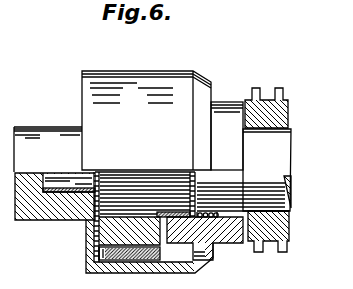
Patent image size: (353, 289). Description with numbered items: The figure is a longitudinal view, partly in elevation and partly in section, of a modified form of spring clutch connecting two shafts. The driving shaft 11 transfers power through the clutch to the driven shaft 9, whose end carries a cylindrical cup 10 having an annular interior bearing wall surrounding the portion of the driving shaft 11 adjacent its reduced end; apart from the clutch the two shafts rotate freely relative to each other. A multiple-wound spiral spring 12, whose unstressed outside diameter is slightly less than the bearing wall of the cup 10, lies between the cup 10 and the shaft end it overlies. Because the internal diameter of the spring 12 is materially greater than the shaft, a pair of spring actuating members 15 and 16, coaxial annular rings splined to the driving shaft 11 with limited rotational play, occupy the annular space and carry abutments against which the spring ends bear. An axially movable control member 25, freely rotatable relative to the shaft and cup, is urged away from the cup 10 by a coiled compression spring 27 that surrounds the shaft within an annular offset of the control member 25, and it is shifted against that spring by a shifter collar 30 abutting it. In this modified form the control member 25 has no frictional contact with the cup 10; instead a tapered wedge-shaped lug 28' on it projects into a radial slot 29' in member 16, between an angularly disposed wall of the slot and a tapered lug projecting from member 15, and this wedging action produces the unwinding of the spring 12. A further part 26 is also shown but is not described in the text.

The driven shaft 9 is at (26, 217).
The cylindrical cup 10 is at (145, 88).
The driving shaft 11 is at (244, 170).
The multiple-wound spiral spring 12 is at (100, 258).
The spring actuating member 15 is at (112, 232).
The spring actuating member 16 is at (208, 262).
The control member 25 is at (238, 239).
The block 26 is at (204, 173).
The coiled compression spring 27 is at (222, 222).
The tapered wedge-shaped lug 28' is at (171, 186).
The radial slot 29' is at (151, 185).
The shifter collar 30 is at (266, 98).